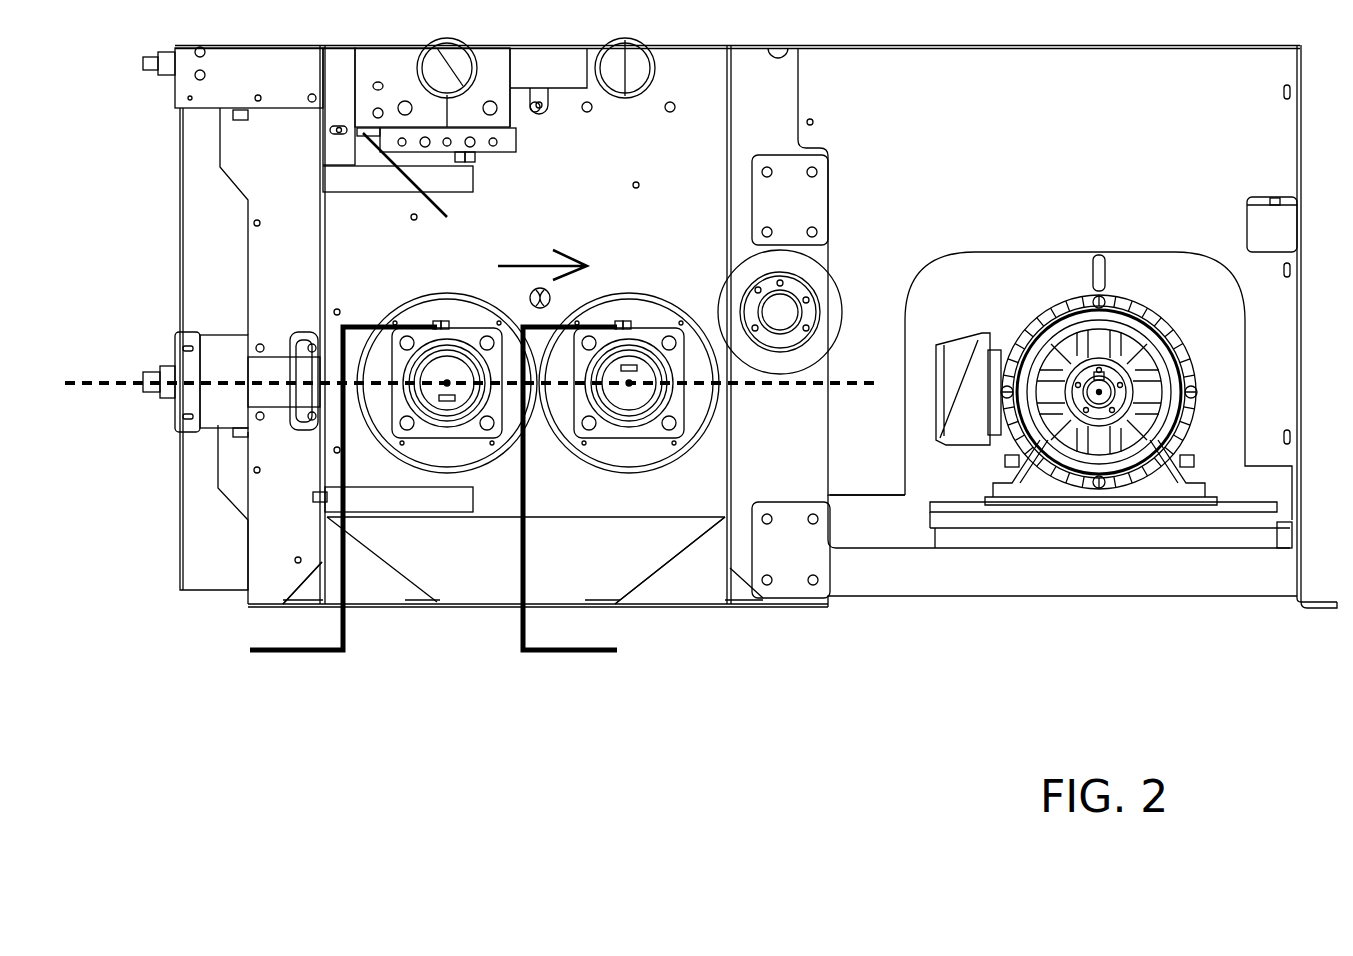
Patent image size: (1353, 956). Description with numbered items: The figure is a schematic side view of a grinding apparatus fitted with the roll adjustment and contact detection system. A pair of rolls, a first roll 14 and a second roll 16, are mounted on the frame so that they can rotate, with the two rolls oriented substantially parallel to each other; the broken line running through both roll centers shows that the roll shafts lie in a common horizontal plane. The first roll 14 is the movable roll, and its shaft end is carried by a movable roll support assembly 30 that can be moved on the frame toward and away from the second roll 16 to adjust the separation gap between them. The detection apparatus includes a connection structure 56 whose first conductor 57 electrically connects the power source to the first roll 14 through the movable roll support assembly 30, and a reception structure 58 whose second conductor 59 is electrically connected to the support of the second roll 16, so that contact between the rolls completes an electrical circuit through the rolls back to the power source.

The first roll 14 is at (437, 452).
The second roll 16 is at (637, 452).
The movable roll support assembly 30 is at (163, 437).
The connection structure 56 is at (318, 704).
The first conductor 57 is at (343, 627).
The reception structure 58 is at (590, 740).
The second conductor 59 is at (522, 630).